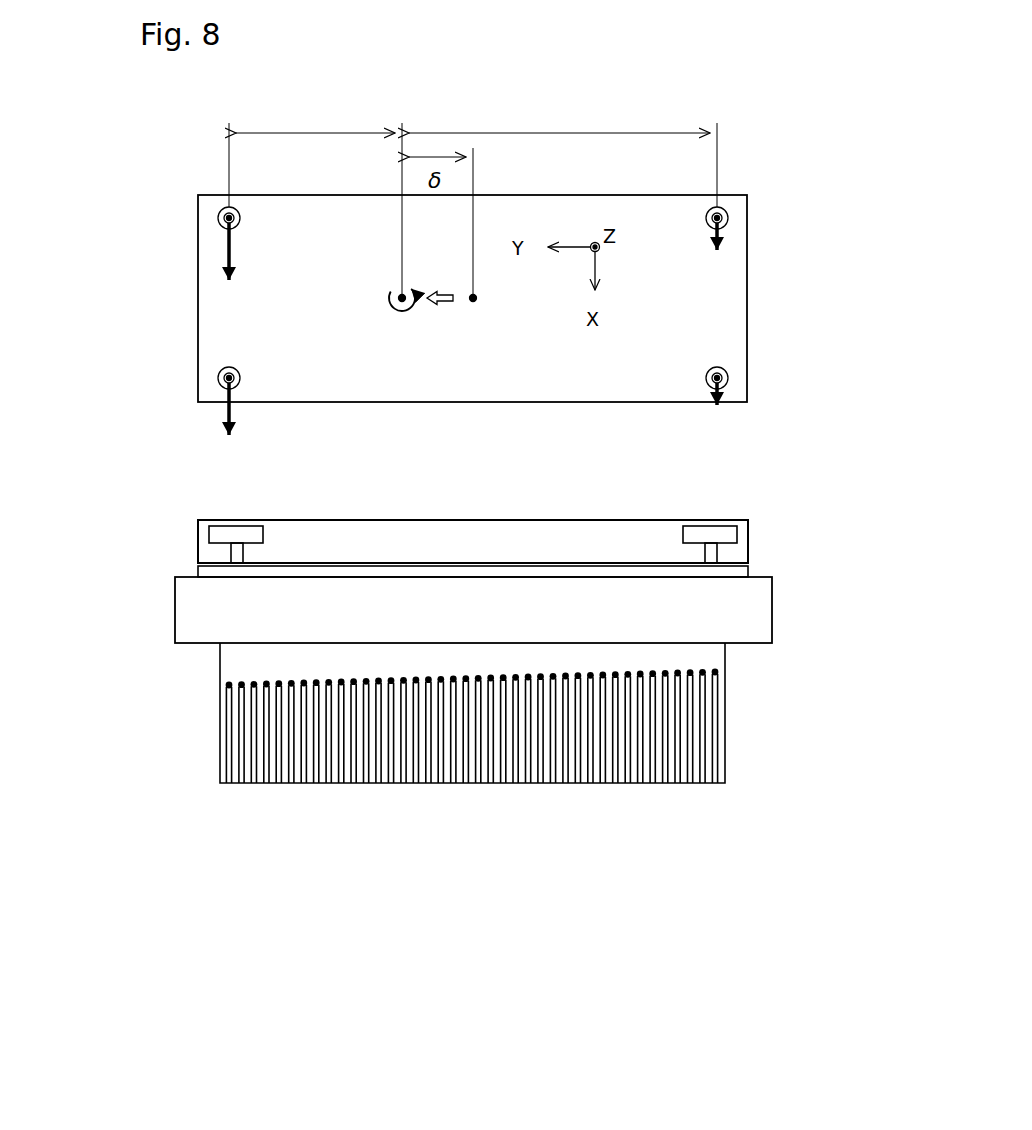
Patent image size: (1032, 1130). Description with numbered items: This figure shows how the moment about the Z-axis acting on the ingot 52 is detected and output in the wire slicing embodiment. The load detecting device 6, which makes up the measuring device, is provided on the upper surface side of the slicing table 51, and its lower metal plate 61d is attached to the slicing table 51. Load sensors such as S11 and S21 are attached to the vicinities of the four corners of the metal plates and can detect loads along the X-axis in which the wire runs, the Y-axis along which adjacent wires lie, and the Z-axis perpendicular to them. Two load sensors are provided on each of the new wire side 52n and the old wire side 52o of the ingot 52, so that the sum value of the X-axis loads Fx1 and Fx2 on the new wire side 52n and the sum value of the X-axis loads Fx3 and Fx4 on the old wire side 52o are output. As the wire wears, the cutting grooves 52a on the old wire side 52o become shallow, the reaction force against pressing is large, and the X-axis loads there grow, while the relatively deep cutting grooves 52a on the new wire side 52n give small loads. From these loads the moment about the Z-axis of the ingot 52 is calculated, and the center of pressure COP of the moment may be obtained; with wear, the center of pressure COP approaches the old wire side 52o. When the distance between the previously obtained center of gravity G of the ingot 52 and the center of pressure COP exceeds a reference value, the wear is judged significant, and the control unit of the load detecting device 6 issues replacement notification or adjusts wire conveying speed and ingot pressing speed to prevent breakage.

The load detecting device 6 is at (754, 548).
The lower metal plate 61d is at (198, 572).
The slicing table 51 is at (750, 612).
The ingot 52 is at (232, 663).
The cutting grooves 52a is at (228, 700).
The old wire side 52o is at (252, 803).
The new wire side 52n is at (686, 810).
The load sensor S11 is at (713, 532).
The load sensor S21 is at (243, 532).
The X-axis direction load Fx1 is at (713, 246).
The X-axis direction load Fx2 is at (715, 404).
The X-axis direction load Fx3 is at (226, 261).
The X-axis direction load Fx4 is at (227, 416).
The center of pressure of the moment COP is at (397, 304).
The center of gravity of the ingot G is at (475, 301).